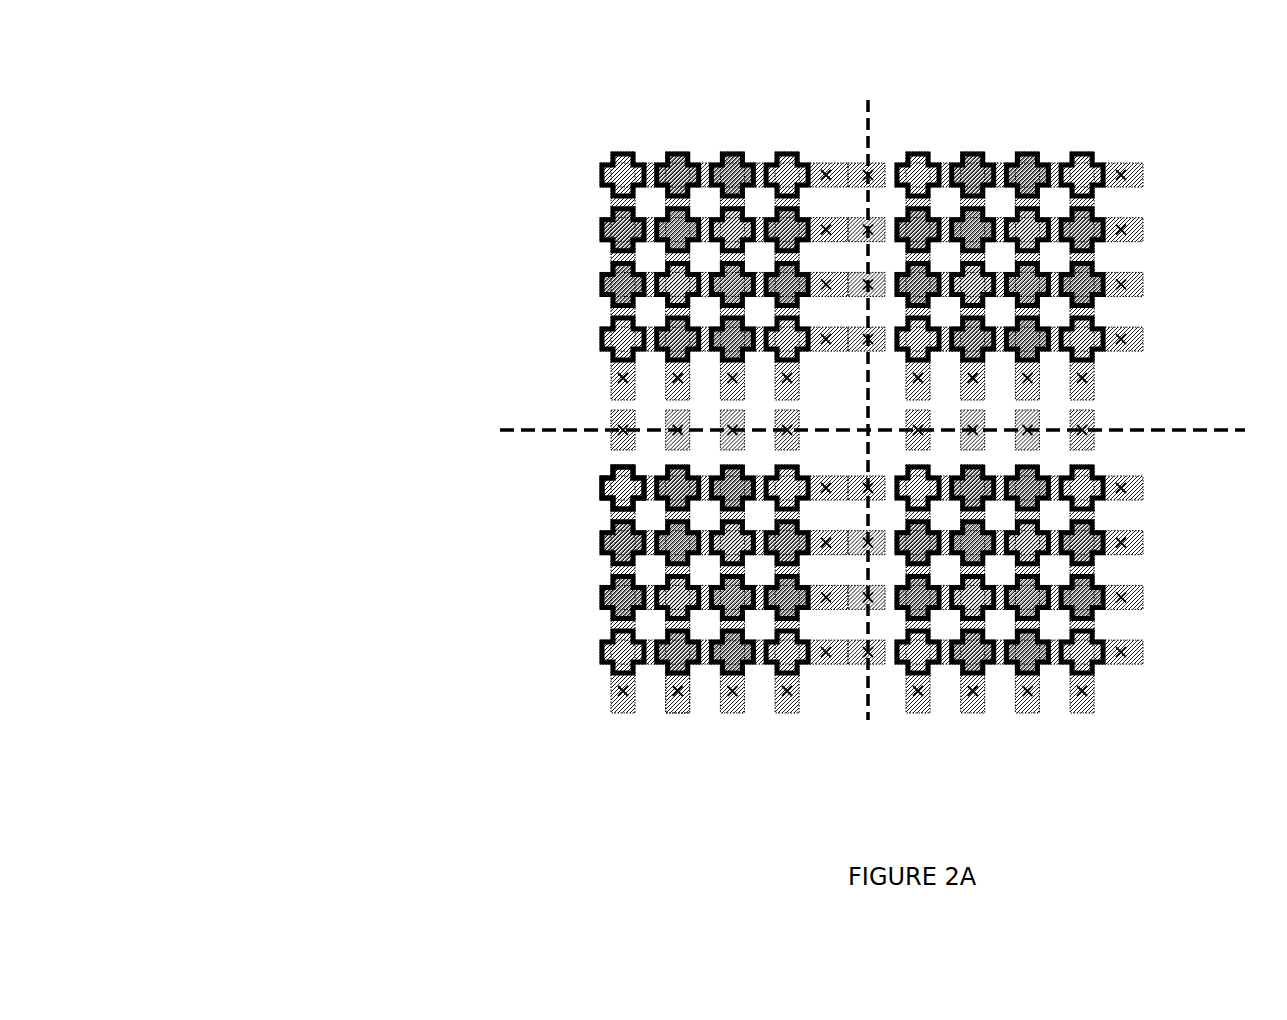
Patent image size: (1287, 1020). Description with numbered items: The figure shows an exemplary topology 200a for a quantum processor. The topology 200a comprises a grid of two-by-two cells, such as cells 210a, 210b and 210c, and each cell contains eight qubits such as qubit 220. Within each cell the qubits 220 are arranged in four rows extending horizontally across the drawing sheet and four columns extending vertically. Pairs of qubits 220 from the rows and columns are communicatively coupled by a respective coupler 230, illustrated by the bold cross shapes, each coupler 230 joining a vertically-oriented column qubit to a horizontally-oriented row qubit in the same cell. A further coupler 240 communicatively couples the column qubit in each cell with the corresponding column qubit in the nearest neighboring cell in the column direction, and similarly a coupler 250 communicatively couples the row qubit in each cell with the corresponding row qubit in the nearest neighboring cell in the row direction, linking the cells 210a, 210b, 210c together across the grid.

The topology 200a is at (703, 412).
The cell 210a is at (1099, 124).
The cell 210b is at (595, 116).
The cell 210c is at (564, 690).
The qubit 220 is at (685, 716).
The coupler 230 is at (600, 487).
The coupler 240 is at (613, 413).
The coupler 250 is at (853, 158).